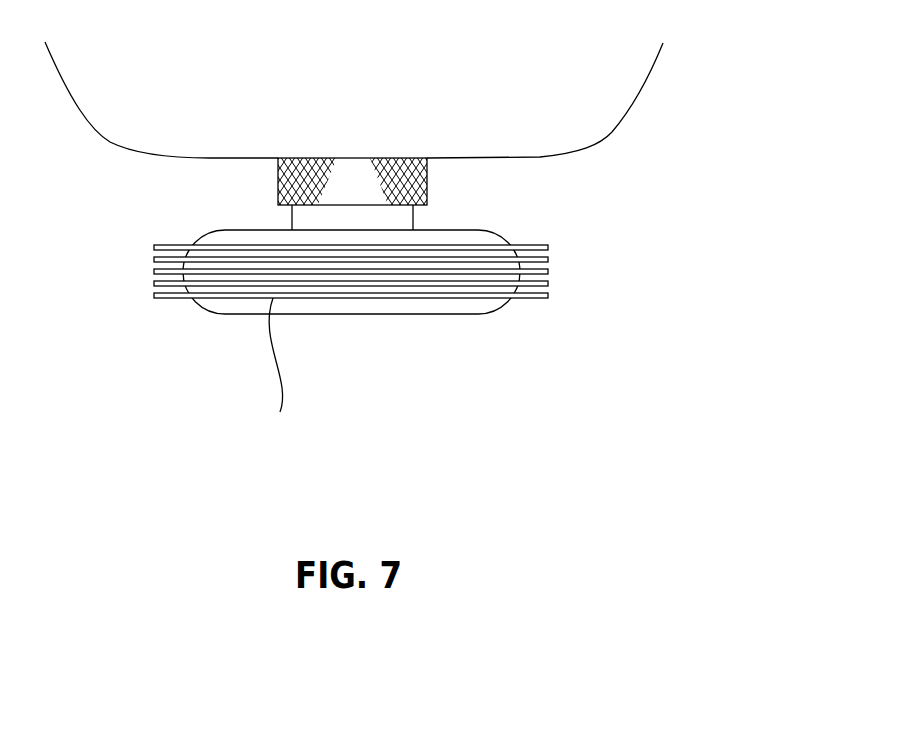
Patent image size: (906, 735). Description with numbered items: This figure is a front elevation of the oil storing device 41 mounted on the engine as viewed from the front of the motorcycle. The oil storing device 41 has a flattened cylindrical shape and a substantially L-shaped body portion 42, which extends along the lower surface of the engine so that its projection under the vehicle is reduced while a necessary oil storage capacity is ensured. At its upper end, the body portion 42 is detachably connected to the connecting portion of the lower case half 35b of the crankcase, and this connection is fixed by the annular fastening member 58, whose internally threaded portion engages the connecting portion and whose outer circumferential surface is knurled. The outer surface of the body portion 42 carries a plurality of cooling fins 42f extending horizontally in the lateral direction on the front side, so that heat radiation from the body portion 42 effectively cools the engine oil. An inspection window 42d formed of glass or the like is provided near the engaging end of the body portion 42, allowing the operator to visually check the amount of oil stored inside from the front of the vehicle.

The lower case half 35b is at (612, 132).
The fastening member 58 is at (427, 188).
The body portion 42 is at (212, 230).
The inspection window 42d is at (276, 371).
The cooling fins 42f is at (548, 248).
The oil storing device 41 is at (388, 324).